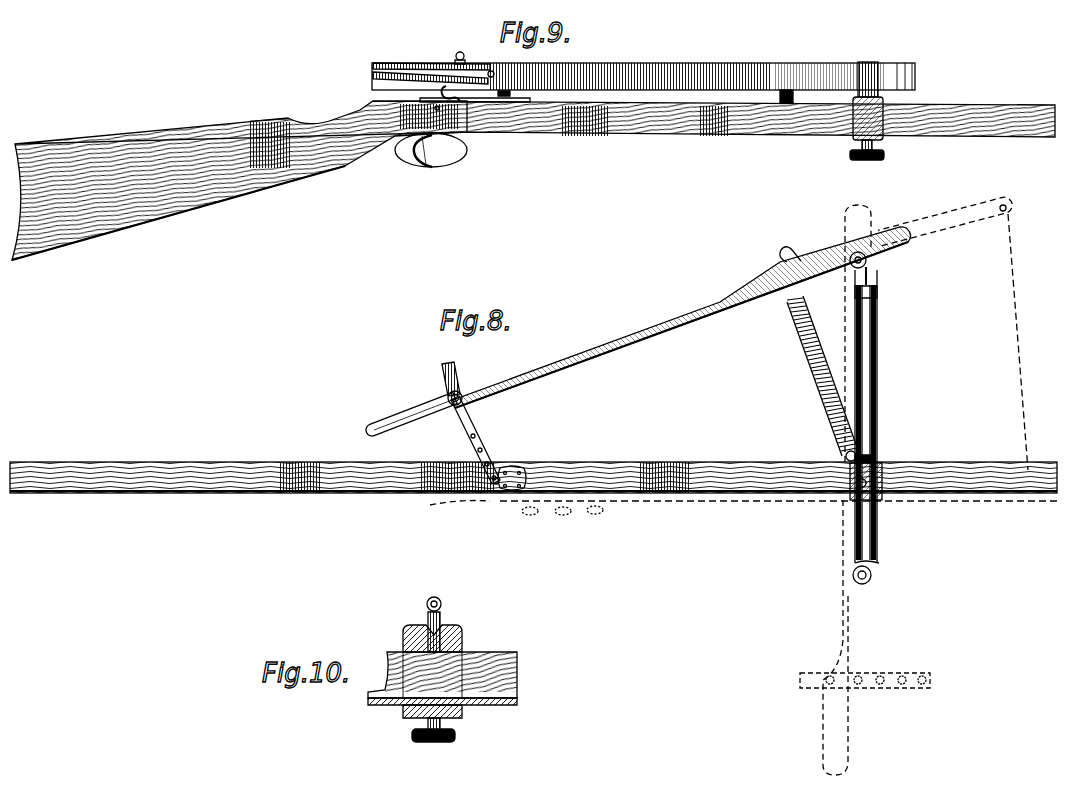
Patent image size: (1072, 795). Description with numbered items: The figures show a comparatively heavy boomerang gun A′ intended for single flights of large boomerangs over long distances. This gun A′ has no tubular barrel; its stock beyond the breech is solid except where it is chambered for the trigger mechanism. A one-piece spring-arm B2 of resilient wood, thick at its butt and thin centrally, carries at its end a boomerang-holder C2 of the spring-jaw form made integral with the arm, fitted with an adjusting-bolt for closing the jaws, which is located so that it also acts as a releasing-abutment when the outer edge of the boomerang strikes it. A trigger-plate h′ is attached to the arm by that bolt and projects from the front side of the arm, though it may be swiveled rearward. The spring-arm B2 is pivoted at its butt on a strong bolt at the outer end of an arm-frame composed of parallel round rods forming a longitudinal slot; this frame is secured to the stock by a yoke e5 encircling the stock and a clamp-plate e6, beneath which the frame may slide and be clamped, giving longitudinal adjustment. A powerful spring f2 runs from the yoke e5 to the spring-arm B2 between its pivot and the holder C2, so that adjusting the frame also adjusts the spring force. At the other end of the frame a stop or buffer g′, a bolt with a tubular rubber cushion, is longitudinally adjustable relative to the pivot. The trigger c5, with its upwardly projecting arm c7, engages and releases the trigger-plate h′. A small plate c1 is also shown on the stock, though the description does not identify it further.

In FIG. 9, the gun A′ is at (533, 169).
In FIG. 8, the gun A′ is at (533, 471).
In FIG. 9, the spring-arm B2 is at (650, 70).
In FIG. 8, the spring-arm B2 is at (740, 333).
In FIG. 9, the boomerang-holder C2 is at (433, 58).
In FIG. 8, the boomerang-holder C2 is at (414, 399).
In FIG. 9, the upwardly projecting arm c7 is at (508, 95).
In FIG. 9, the trigger-plate h′ is at (438, 93).
In FIG. 8, the trigger-plate h′ is at (476, 440).
In FIG. 9, the trigger c5 is at (431, 150).
In FIG. 8, the plate c1 is at (505, 470).
In FIG. 9, the yoke e5 is at (872, 130).
In FIG. 8, the yoke e5 is at (875, 470).
In FIG. 10, the yoke e5 is at (462, 652).
In FIG. 8, the clamp-plate e6 is at (852, 497).
In FIG. 10, the clamp-plate e6 is at (450, 626).
In FIG. 8, the spring f2 is at (818, 378).
In FIG. 8, the stop or buffer g′ is at (872, 572).